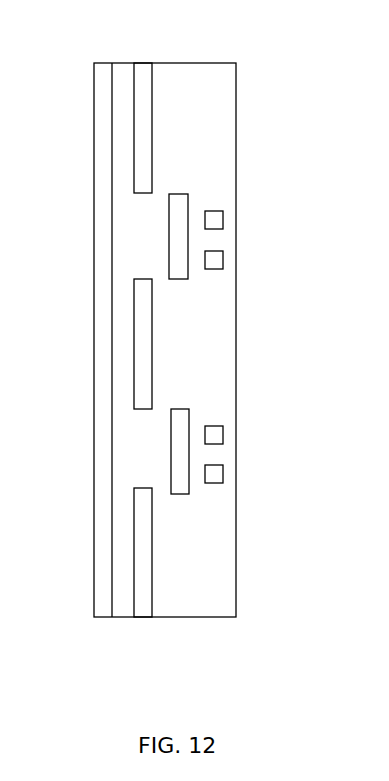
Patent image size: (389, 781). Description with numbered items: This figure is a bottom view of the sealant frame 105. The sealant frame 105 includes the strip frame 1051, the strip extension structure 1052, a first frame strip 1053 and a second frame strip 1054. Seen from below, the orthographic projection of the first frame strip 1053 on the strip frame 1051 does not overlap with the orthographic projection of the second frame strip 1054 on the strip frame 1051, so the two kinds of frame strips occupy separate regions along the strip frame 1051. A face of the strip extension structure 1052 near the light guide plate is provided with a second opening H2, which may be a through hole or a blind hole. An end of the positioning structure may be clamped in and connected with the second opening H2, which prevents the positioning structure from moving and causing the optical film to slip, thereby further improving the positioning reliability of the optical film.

The sealant frame 105 is at (88, 58).
The strip frame 1051 is at (106, 630).
The strip extension structure 1052 is at (226, 468).
The first frame strip 1053 is at (208, 103).
The second frame strip 1054 is at (242, 202).
The second opening H2 is at (234, 221).